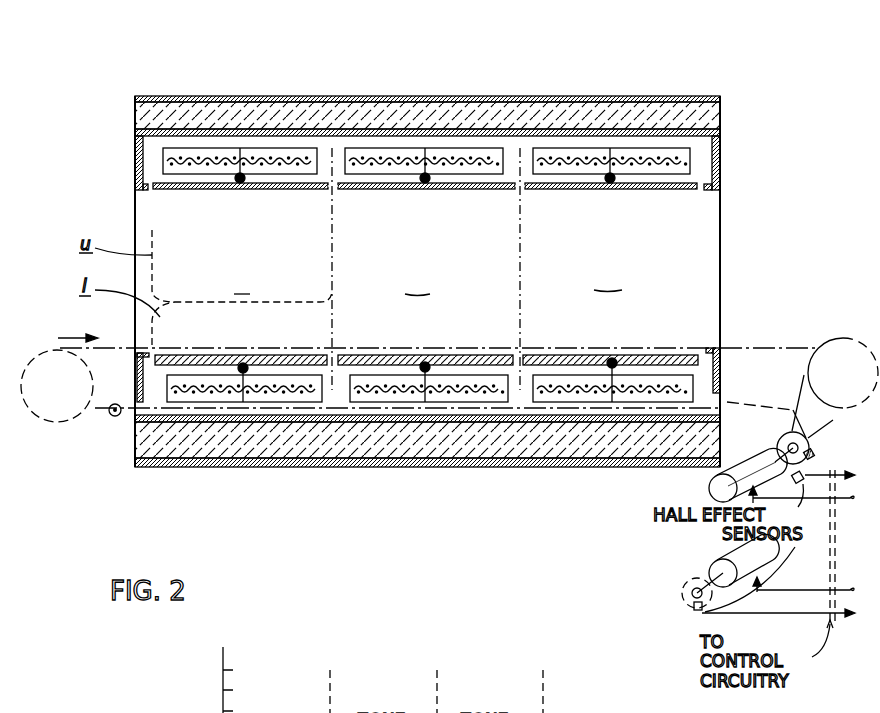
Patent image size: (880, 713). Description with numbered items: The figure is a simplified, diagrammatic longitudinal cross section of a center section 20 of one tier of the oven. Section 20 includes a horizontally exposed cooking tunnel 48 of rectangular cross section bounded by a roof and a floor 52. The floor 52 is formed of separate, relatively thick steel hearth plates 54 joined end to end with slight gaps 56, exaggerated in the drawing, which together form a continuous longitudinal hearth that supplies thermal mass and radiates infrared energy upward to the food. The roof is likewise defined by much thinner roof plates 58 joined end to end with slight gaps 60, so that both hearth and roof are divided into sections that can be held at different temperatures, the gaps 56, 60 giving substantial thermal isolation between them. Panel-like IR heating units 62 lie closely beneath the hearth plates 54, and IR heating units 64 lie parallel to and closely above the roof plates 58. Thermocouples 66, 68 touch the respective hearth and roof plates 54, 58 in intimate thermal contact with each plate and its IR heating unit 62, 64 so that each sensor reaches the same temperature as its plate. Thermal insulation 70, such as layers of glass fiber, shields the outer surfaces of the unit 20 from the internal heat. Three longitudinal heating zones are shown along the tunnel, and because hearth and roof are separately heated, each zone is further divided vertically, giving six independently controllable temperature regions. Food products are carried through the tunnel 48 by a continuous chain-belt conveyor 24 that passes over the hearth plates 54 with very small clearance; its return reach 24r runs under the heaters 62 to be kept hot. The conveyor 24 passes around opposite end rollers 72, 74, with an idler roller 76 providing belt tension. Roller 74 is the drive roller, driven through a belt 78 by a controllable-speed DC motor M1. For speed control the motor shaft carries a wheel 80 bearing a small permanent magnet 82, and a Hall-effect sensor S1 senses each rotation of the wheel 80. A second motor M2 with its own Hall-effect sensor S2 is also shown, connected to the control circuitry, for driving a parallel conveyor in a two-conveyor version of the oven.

The center section 20 is at (727, 77).
The conveyor 24 is at (732, 338).
The conveyor return reach 24r is at (493, 403).
The cooking tunnel 48 is at (437, 254).
The floor 52 is at (469, 335).
The hearth plate 54 is at (173, 355).
The gap 56 is at (342, 347).
The roof plate 58 is at (210, 190).
The gap 60 is at (328, 192).
The IR heating unit 62 is at (192, 402).
The IR heating unit 64 is at (197, 170).
The thermocouple 66 is at (243, 363).
The thermocouple 68 is at (240, 184).
The thermal insulation 70 is at (303, 107).
The end roller 72 is at (40, 418).
The drive roller 74 is at (818, 338).
The idler roller 76 is at (115, 418).
The belt 78 is at (793, 418).
The wheel 80 is at (777, 443).
The permanent magnet 82 is at (813, 453).
The DC motor M1 is at (720, 480).
The motor M2 is at (715, 562).
The sensor S1 is at (804, 473).
The Hall-effect sensor S2 is at (697, 611).